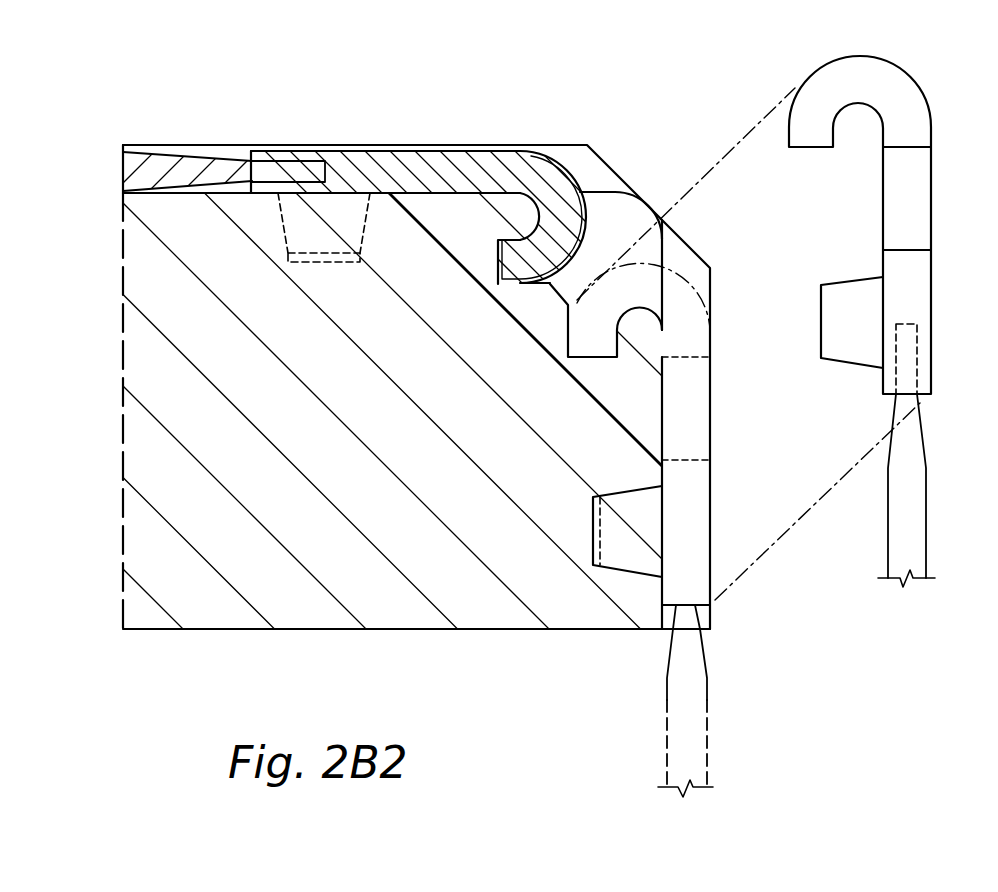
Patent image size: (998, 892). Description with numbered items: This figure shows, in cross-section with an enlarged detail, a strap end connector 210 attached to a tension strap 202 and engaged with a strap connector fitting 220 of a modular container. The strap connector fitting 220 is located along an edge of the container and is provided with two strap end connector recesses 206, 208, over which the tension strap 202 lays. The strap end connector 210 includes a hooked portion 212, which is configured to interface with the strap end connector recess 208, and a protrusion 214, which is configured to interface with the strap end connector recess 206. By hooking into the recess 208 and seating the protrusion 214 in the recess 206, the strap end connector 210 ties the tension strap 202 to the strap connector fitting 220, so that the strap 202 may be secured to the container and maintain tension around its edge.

The tension strap 202 is at (139, 152).
The strap end connector recess 206 is at (340, 262).
The strap end connector recess 208 is at (588, 350).
The strap end connector 210 is at (356, 152).
The hooked portion 212 is at (878, 70).
The protrusion 214 is at (308, 262).
The strap connector fitting 220 is at (402, 622).